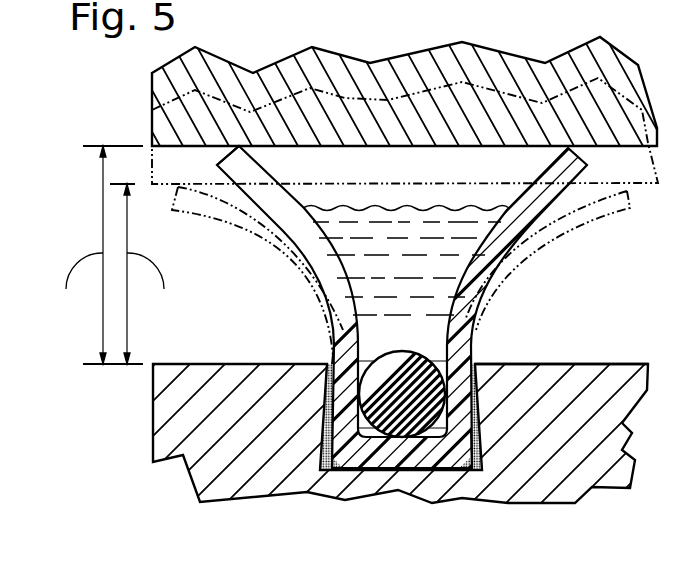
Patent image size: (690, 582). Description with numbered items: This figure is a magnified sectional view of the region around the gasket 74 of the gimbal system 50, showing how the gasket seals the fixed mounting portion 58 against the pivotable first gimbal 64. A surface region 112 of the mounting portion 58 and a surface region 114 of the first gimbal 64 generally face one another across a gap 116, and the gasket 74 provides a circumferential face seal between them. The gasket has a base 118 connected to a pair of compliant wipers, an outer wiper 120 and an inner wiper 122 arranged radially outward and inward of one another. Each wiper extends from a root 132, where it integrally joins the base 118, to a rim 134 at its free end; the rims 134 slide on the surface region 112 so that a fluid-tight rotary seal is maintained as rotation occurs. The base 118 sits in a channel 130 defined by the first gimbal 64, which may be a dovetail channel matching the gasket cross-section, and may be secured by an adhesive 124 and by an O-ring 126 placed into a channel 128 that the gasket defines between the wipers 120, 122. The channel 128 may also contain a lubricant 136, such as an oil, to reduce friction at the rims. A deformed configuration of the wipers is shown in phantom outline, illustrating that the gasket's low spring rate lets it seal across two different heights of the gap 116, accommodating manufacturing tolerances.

The fluid system assembly 50 is at (109, 78).
The mounting portion 58 is at (152, 98).
The first gimbal 64 is at (153, 413).
The gasket 74 is at (487, 334).
The surface region 112 is at (637, 147).
The surface region 114 is at (598, 364).
The gap 116 is at (134, 145).
The base 118 is at (325, 419).
The outer wiper 120 is at (250, 196).
The inner wiper 122 is at (538, 198).
The adhesive 124 is at (476, 467).
The O-ring 126 is at (382, 410).
The channel 128 is at (444, 405).
The channel 130 is at (475, 443).
The root 132 is at (333, 362).
The rim 134 is at (243, 144).
The lubricant 136 is at (402, 207).